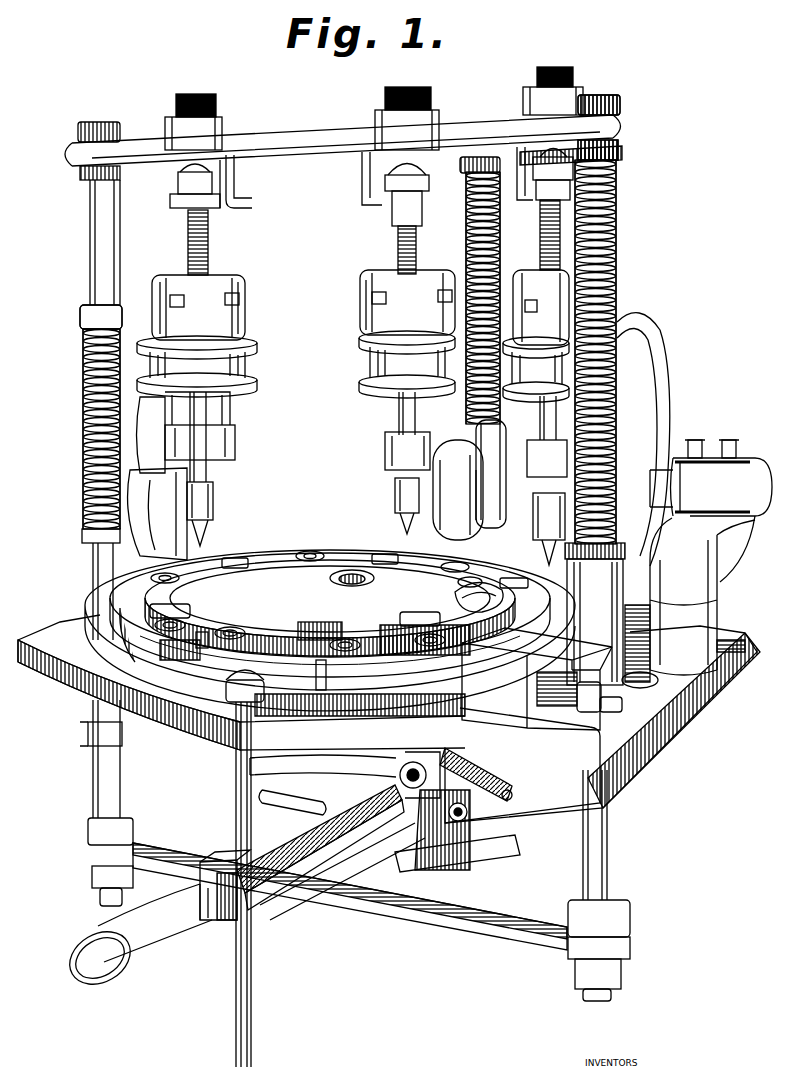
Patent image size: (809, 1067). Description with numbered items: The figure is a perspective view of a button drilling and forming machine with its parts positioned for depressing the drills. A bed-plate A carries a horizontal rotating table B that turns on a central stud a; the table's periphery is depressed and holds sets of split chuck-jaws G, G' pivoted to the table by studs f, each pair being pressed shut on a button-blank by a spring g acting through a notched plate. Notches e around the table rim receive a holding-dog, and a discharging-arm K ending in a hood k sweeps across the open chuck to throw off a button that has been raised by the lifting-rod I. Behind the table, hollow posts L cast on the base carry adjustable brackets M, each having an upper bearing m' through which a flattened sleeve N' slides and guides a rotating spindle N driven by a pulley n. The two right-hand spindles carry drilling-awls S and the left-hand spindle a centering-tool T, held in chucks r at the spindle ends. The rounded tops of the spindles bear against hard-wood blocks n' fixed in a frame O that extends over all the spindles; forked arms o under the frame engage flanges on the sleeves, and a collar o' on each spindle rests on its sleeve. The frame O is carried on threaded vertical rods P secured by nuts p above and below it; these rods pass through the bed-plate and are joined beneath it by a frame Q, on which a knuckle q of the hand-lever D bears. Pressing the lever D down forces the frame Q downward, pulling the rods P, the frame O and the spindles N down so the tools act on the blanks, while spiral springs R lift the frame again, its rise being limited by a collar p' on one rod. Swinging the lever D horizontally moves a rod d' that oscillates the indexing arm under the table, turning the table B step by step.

The block n' is at (193, 110).
The frame O is at (296, 145).
The collar o' is at (184, 186).
The arm o is at (236, 193).
The vertical rod P is at (619, 230).
The sleeve N' is at (179, 242).
The nut p is at (609, 125).
The bracket M is at (156, 320).
The upper bearing m' is at (84, 336).
The pulley n is at (353, 367).
The spiral spring R is at (83, 426).
The spindle N is at (213, 437).
The centering-tool T is at (213, 498).
The lifting-rod I is at (210, 526).
The hollow post L is at (168, 538).
The chuck r is at (394, 498).
The drilling-awl S is at (412, 528).
The central stud a is at (372, 576).
The hood k is at (486, 590).
The rotating table B is at (330, 615).
The chuck-jaw G is at (330, 599).
The spring g is at (334, 622).
The discharging-arm K is at (471, 597).
The stud f is at (200, 648).
The chuck-jaw G' is at (330, 620).
The notch e is at (326, 680).
The bed-plate A is at (389, 719).
The collar p' is at (119, 751).
The rod d' is at (234, 868).
The frame Q is at (350, 896).
The knuckle q is at (414, 850).
The hand-lever D is at (136, 939).